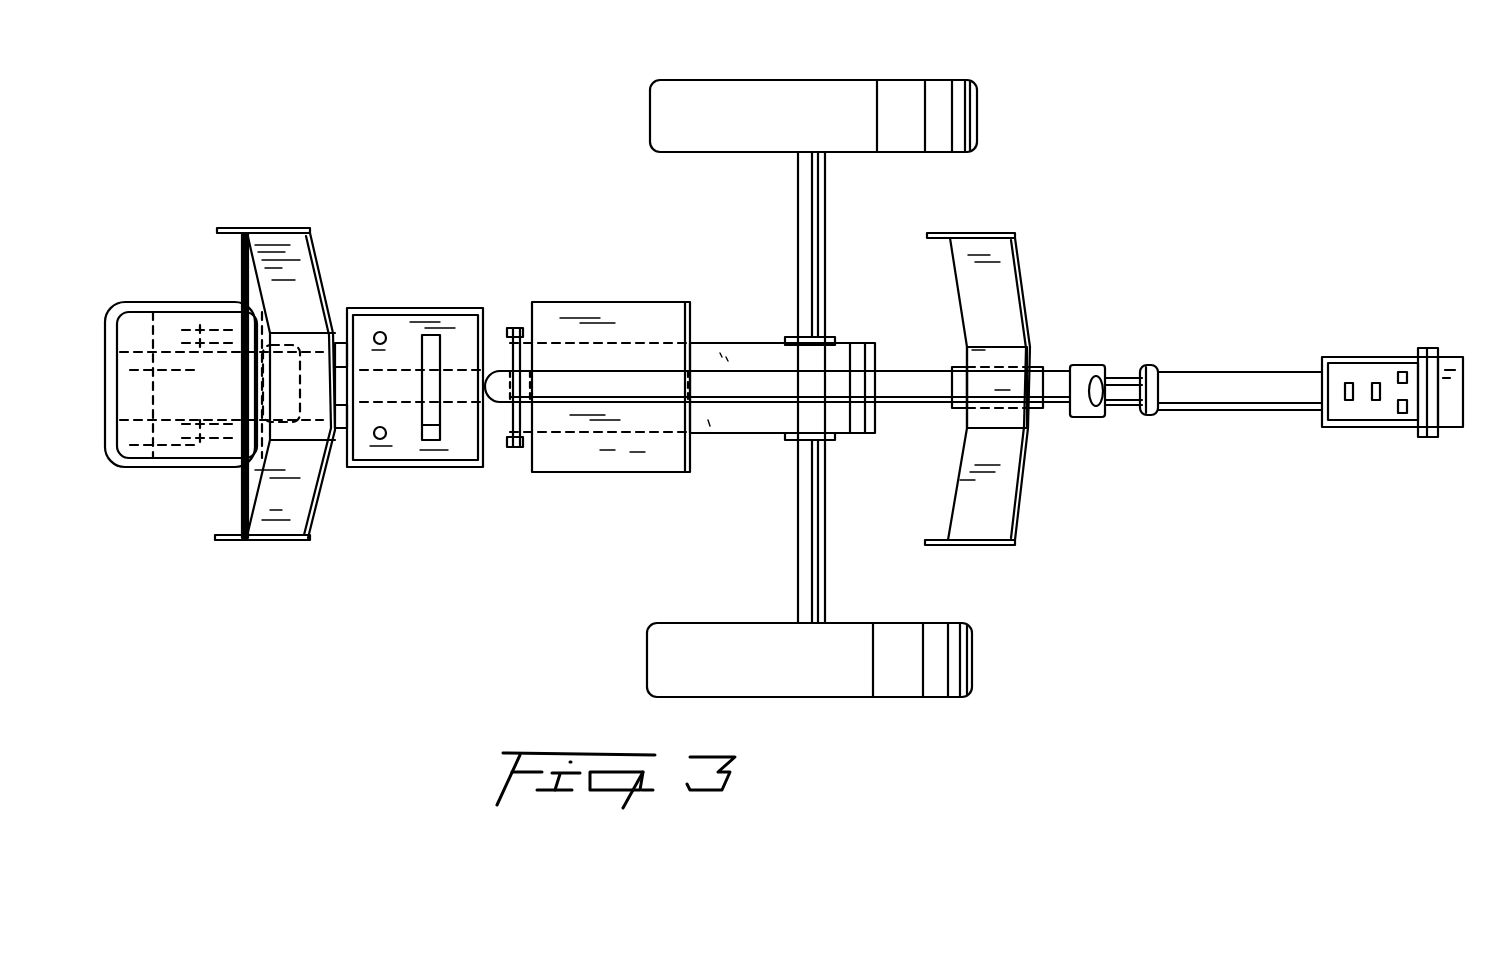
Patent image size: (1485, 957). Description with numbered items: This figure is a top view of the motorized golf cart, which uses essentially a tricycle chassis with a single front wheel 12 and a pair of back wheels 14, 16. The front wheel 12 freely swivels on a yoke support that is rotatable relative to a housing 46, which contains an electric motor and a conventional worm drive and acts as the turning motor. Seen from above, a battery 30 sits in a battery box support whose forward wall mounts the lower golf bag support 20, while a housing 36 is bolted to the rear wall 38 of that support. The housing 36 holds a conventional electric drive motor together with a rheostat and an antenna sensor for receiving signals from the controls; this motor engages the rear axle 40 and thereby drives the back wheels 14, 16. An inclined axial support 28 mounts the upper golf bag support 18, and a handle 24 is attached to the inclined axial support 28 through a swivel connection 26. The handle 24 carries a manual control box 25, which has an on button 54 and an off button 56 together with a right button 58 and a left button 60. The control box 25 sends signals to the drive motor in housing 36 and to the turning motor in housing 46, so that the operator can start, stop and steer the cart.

The front wheel 12 is at (170, 345).
The back wheel 14 is at (710, 623).
The back wheel 16 is at (738, 80).
The upper golf bag support 18 is at (1007, 282).
The lower golf bag support 20 is at (302, 275).
The handle 24 is at (1215, 380).
The manual control box 25 is at (1383, 357).
The swivel connection 26 is at (1125, 404).
The inclined axial support 28 is at (917, 371).
The battery 30 is at (405, 327).
The housing 36 is at (748, 345).
The rear wall 38 is at (513, 360).
The rear axle 40 is at (805, 193).
The housing 46 is at (130, 325).
The on button 54 is at (1345, 394).
The off button 56 is at (1377, 401).
The right button 58 is at (1405, 374).
The left button 60 is at (1403, 414).